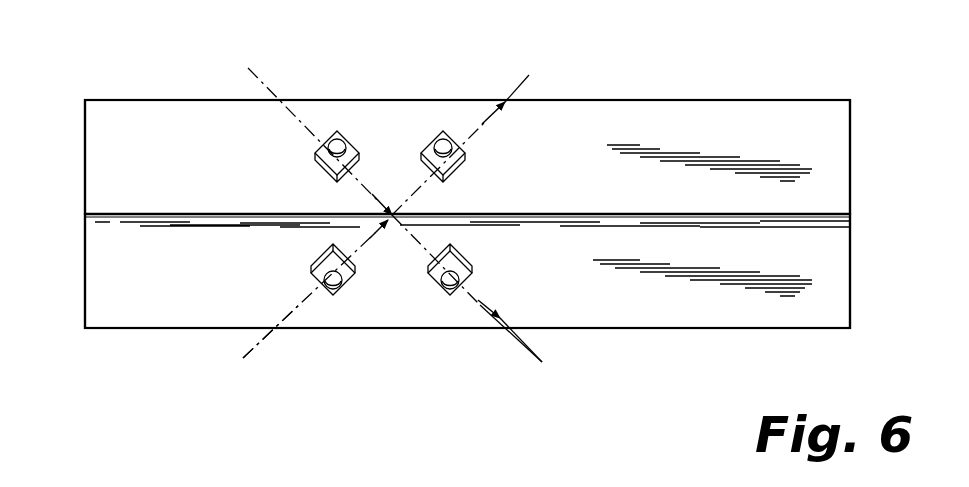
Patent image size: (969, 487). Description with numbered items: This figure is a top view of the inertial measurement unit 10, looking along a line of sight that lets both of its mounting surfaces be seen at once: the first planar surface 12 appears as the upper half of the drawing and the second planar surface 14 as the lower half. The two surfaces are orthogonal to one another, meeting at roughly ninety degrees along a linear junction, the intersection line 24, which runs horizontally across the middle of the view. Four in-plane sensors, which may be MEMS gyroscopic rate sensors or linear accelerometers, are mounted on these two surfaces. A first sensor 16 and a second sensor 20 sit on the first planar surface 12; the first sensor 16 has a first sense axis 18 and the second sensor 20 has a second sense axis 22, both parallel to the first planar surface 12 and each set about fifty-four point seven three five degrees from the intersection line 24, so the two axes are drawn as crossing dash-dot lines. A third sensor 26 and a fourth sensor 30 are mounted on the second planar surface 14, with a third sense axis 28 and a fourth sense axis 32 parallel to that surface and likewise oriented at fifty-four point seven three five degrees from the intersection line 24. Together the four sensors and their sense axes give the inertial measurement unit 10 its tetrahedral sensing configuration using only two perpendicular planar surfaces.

The inertial measurement unit 10 is at (150, 80).
The first planar surface 12 is at (709, 118).
The second planar surface 14 is at (705, 300).
The first sensor 16 is at (345, 148).
The first sense axis 18 is at (280, 100).
The second sensor 20 is at (446, 132).
The second sense axis 22 is at (486, 122).
The intersection line 24 is at (586, 214).
The third sensor 26 is at (340, 296).
The third sense axis 28 is at (281, 328).
The fourth sensor 30 is at (447, 296).
The fourth sense axis 32 is at (492, 312).